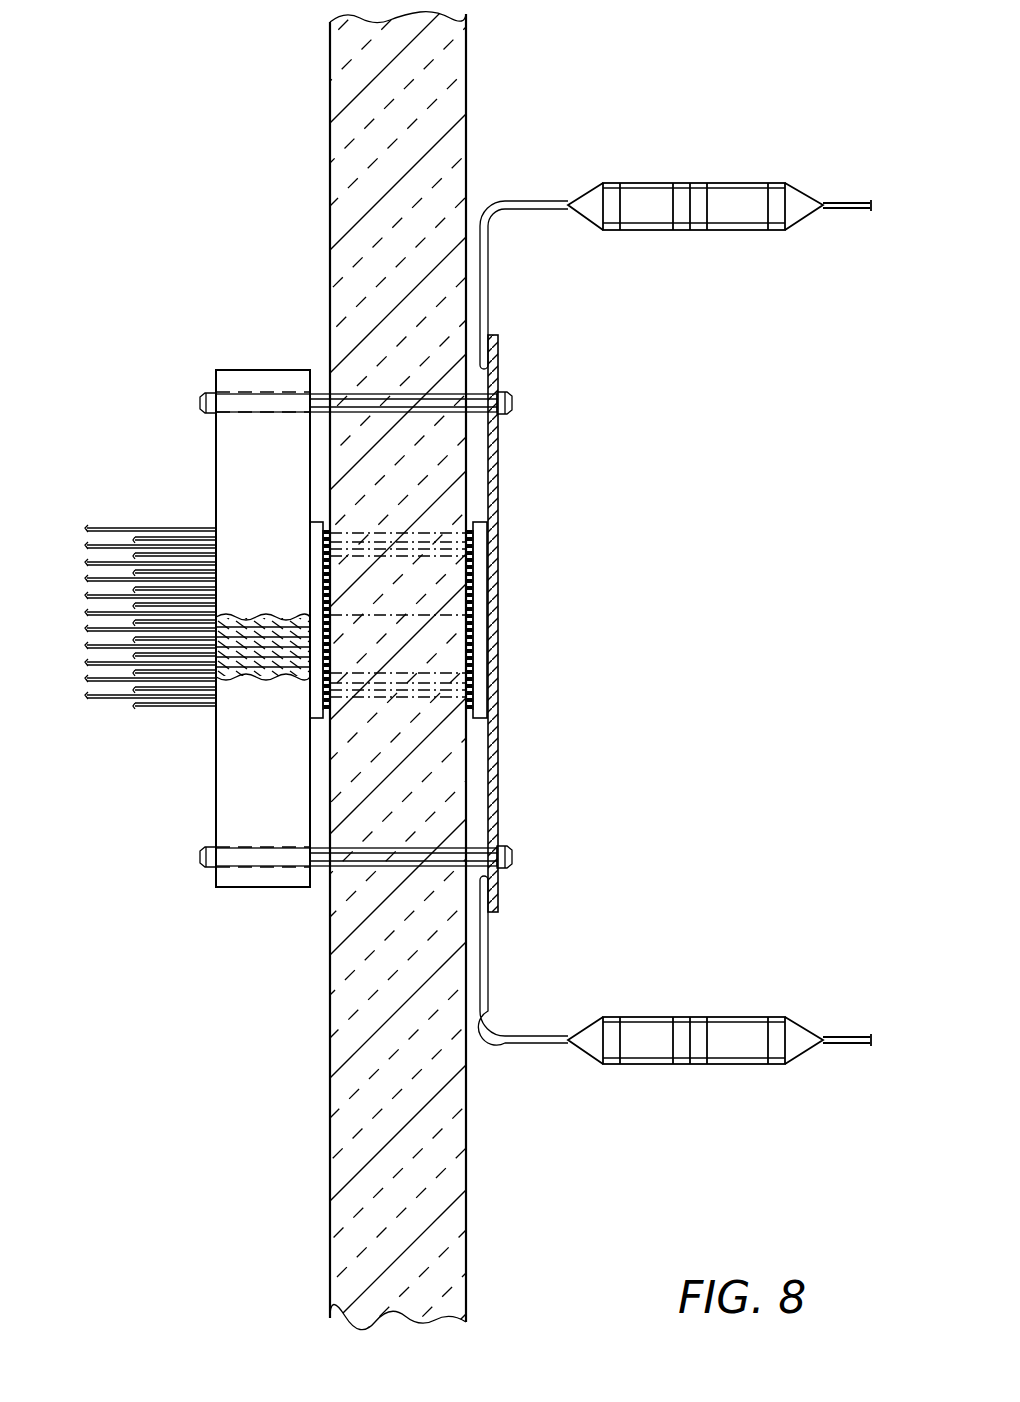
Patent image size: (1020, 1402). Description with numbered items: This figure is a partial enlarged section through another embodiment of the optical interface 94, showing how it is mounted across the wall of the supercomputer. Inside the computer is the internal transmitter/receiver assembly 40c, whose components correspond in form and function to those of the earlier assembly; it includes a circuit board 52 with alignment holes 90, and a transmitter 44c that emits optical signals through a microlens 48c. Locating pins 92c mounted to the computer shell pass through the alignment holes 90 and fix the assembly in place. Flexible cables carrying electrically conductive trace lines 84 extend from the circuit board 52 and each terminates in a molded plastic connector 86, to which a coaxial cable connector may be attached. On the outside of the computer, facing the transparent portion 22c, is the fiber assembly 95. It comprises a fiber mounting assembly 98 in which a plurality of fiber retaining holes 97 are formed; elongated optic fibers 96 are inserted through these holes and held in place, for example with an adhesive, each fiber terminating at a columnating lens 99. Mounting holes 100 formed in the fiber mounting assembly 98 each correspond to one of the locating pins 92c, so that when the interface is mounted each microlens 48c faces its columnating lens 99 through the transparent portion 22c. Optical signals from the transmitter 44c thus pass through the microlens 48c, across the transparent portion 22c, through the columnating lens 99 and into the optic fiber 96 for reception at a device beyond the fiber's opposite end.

The optical interface 94 is at (240, 155).
The fiber mounting assembly 98 is at (248, 710).
The mounting holes 100 is at (312, 870).
The circuit board 52 is at (497, 392).
The locating pins 92c is at (514, 858).
The alignment holes 90 is at (508, 412).
The internal transmitter/receiver assembly 40c is at (498, 493).
The microlens 48c is at (328, 533).
The columnating lens 99 is at (323, 717).
The transmitter 44c is at (474, 628).
The transparent portion 22c is at (425, 568).
The trace lines 84 is at (528, 198).
The molded plastic connector 86 is at (665, 183).
The optic fibers 96 is at (93, 528).
The fiber assembly 95 is at (183, 528).
The fiber retaining hole 97 is at (218, 676).